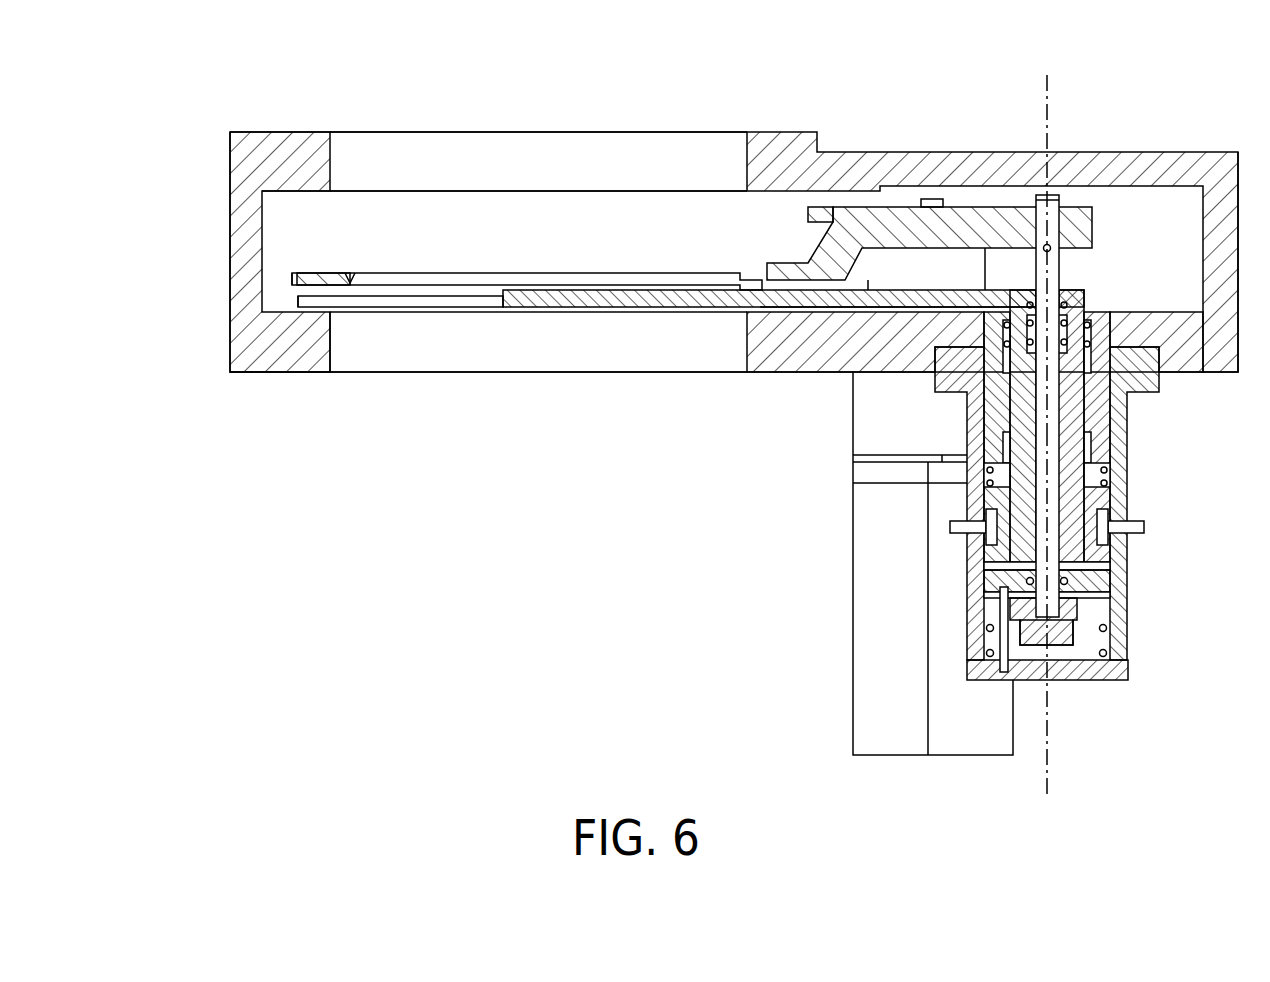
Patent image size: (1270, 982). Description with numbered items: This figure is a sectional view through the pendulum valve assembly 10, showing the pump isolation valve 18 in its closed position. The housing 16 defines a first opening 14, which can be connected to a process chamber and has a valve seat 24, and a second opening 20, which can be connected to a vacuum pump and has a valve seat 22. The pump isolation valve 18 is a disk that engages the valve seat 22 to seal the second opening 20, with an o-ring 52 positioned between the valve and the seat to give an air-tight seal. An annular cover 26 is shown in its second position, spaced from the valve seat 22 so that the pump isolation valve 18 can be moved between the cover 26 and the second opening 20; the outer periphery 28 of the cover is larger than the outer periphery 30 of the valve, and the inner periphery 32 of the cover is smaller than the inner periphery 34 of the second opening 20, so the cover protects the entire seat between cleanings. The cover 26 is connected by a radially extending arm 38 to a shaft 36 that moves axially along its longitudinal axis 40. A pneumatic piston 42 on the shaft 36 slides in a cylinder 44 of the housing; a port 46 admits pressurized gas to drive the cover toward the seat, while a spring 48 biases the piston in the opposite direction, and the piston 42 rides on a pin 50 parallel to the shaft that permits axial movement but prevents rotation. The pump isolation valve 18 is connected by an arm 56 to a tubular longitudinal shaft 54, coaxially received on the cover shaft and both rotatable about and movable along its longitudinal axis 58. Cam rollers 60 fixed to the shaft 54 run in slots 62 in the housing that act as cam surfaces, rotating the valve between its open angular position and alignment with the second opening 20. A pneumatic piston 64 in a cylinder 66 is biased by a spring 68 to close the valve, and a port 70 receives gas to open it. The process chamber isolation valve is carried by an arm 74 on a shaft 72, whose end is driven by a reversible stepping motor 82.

The valve assembly 10 is at (232, 480).
The first opening 14 is at (683, 131).
The housing 16 is at (791, 123).
The pump isolation valve 18 is at (468, 307).
The second opening 20 is at (428, 373).
The valve seat 22 is at (272, 372).
The valve seat 24 is at (300, 192).
The annular cover 26 is at (432, 273).
The outer periphery 28 is at (292, 277).
The outer periphery 30 is at (298, 300).
The inner periphery 32 is at (355, 280).
The inner periphery 34 is at (332, 349).
The shaft 36 is at (1057, 199).
The arm 38 is at (1092, 237).
The longitudinal axis 40 is at (1050, 95).
The pneumatic piston 42 is at (1065, 648).
The cylinder 44 is at (1128, 655).
The port 46 is at (1128, 593).
The spring 48 is at (1128, 628).
The pin 50 is at (1015, 668).
The o-rings 52 is at (520, 308).
The longitudinal shaft 54 is at (1083, 302).
The arm 56 is at (820, 307).
The longitudinal axis 58 is at (1050, 740).
The cam rollers 60 is at (950, 527).
The slots 62 is at (975, 548).
The pneumatic piston 64 is at (1112, 495).
The cylinder 66 is at (975, 487).
The spring 68 is at (1112, 465).
The port 70 is at (1125, 575).
The shaft 72 is at (935, 199).
The arm 74 is at (847, 207).
The motor 82 is at (872, 680).